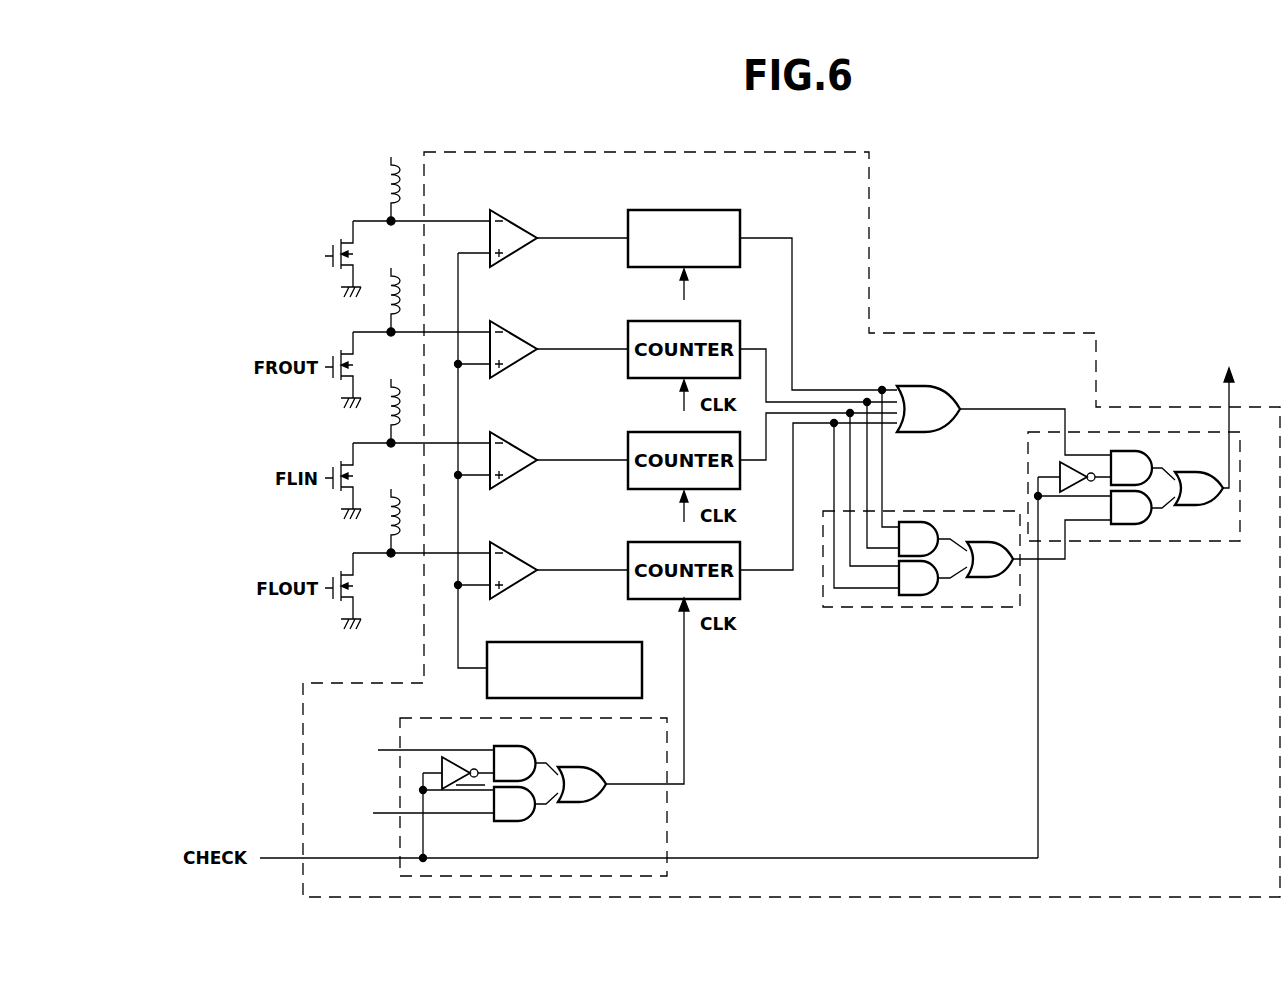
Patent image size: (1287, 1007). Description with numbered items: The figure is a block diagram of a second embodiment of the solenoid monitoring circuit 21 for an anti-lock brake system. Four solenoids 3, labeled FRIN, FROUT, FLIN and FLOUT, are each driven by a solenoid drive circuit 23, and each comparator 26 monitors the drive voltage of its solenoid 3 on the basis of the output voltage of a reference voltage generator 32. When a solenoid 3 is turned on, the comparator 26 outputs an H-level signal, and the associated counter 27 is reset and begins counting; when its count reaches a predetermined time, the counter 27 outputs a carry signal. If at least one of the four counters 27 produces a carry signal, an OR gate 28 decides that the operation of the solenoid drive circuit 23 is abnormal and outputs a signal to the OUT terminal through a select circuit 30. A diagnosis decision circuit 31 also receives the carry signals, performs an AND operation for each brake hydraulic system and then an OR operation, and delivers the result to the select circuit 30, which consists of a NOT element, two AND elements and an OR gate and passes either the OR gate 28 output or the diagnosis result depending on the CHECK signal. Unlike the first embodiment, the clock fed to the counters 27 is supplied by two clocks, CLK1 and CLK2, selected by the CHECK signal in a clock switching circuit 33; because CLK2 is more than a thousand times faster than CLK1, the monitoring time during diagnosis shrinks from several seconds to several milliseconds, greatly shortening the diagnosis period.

The solenoid 3 is at (386, 183).
The solenoid monitoring circuit 21 is at (929, 340).
The solenoid drive circuit 23 is at (340, 242).
The comparator 26 is at (510, 224).
The counter 27 is at (672, 212).
The OR gate 28 is at (940, 400).
The select circuit 30 is at (1191, 541).
The diagnosis decision circuit 31 is at (955, 608).
The reference voltage generator 32 is at (555, 643).
The clock switching circuit 33 is at (660, 808).